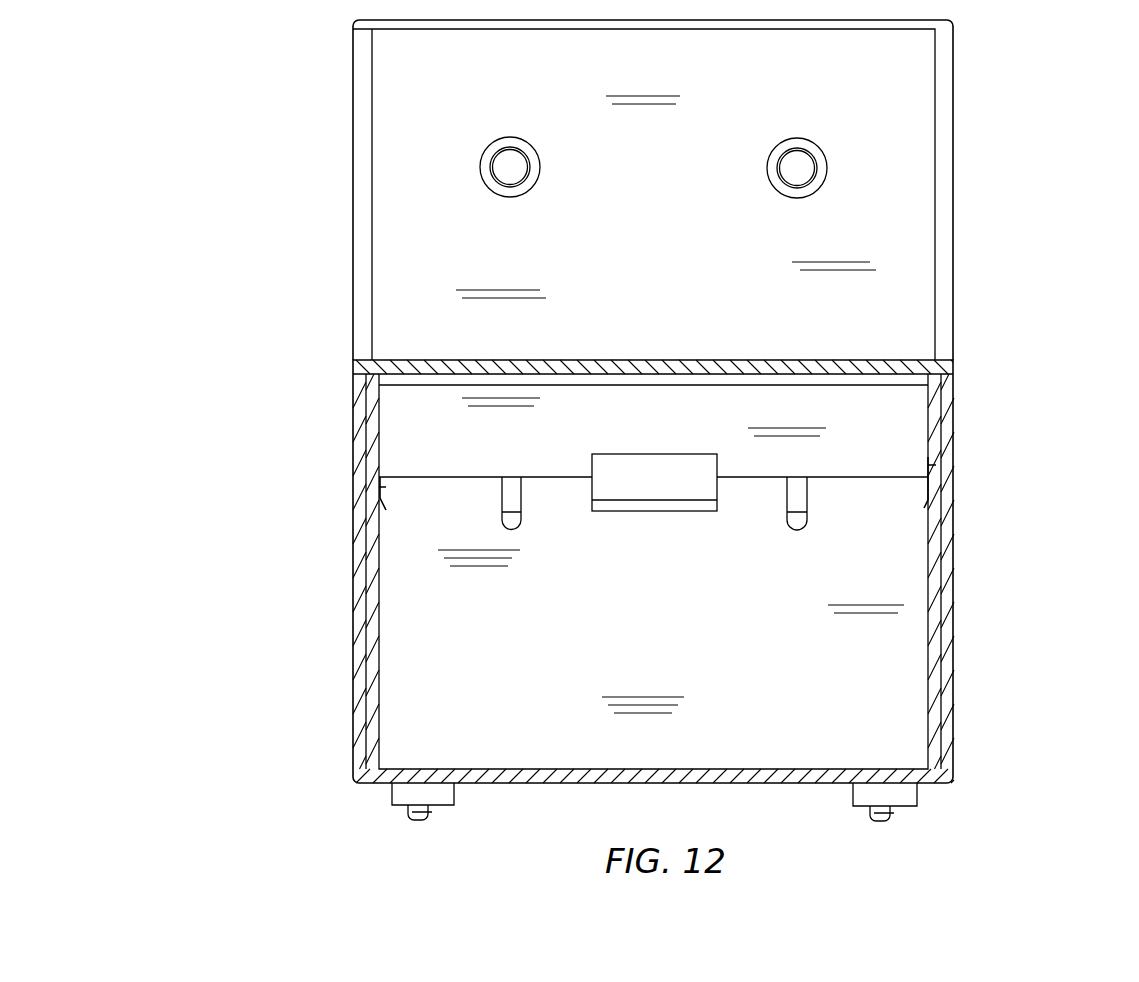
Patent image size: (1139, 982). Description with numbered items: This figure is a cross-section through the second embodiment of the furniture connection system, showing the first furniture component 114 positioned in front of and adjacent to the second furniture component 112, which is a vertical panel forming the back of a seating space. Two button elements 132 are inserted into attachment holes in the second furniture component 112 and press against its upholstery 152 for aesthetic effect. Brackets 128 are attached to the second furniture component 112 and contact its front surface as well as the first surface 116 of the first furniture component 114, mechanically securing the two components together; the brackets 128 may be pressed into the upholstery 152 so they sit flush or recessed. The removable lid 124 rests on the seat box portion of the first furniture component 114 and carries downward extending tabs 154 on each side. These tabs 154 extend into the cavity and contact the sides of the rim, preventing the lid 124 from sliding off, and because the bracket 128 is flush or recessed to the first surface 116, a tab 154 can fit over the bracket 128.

The second furniture component 112 is at (958, 212).
The button elements 132 is at (820, 165).
The upholstery 152 is at (955, 577).
The lid 124 is at (352, 400).
The first furniture component 114 is at (942, 513).
The first surface 116 is at (962, 686).
The bracket 128 is at (502, 502).
The tab 154 is at (380, 490).